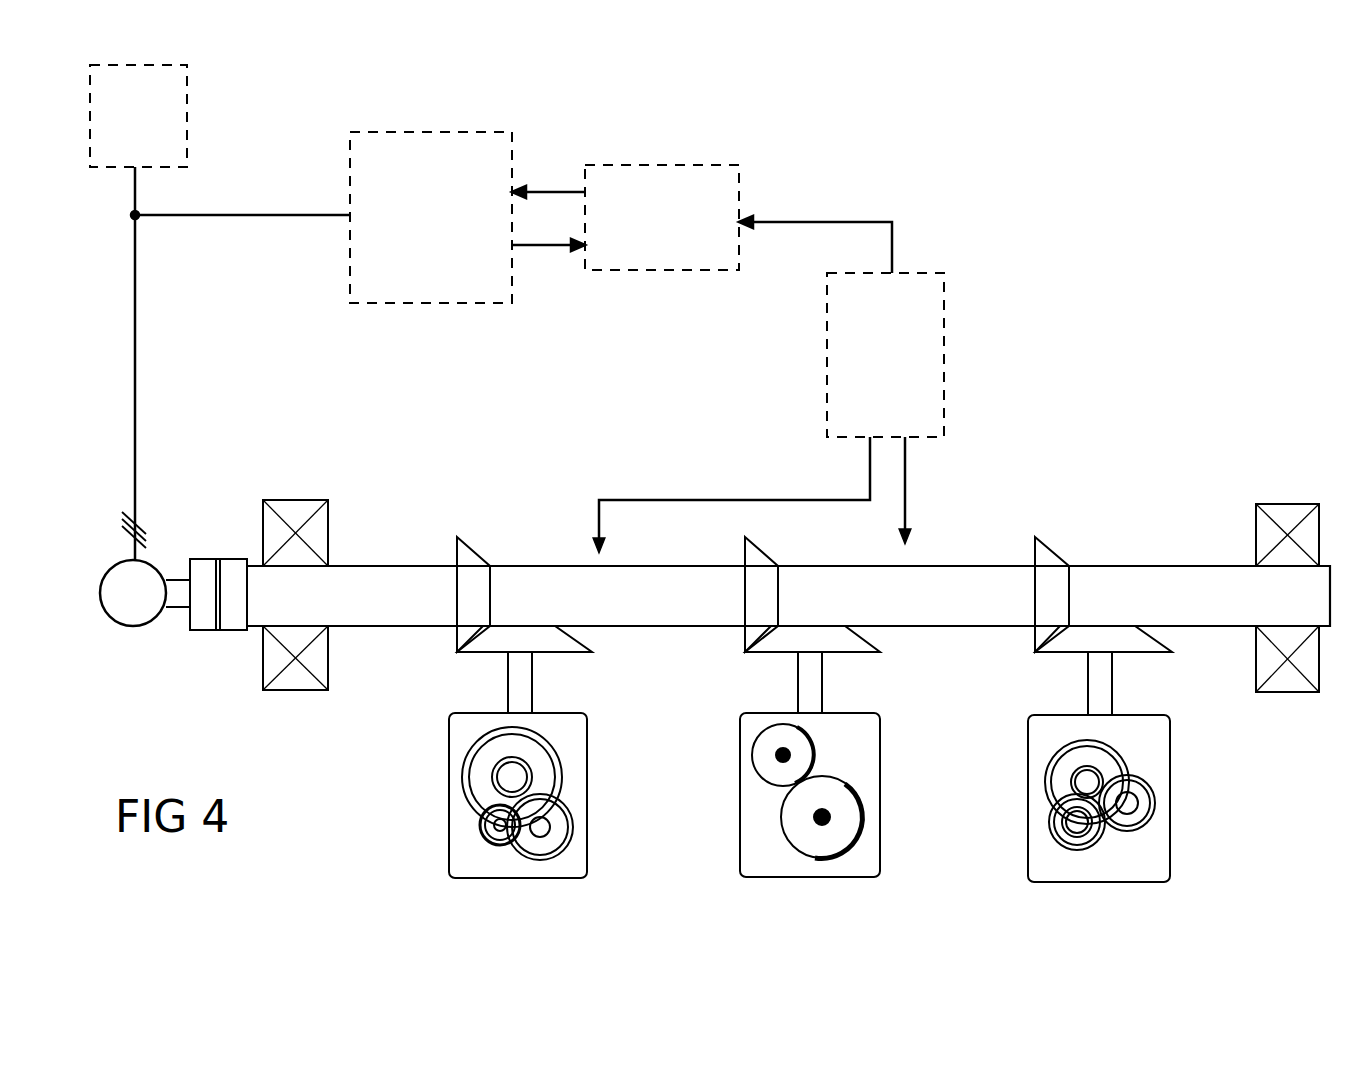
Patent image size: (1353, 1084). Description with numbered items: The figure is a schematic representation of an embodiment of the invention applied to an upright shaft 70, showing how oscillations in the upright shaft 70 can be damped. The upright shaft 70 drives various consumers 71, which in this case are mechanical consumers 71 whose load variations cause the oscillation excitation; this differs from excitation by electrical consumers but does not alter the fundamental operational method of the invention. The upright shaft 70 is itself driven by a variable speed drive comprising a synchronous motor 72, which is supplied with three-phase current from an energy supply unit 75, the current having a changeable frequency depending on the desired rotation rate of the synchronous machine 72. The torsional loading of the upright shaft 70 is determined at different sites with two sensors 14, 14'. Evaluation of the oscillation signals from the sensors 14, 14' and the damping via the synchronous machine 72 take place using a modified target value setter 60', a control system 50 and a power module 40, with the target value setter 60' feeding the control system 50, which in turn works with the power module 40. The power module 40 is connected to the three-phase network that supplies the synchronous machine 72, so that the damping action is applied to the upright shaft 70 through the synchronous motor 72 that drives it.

The energy supply unit 75 is at (150, 133).
The power module 40 is at (420, 303).
The control system 50 is at (640, 270).
The modified target value setter 60' is at (920, 355).
The sensor 14 is at (936, 490).
The sensor 14' is at (703, 495).
The synchronous motor 72 is at (130, 627).
The upright shaft 70 is at (928, 627).
The consumers 71 is at (507, 878).